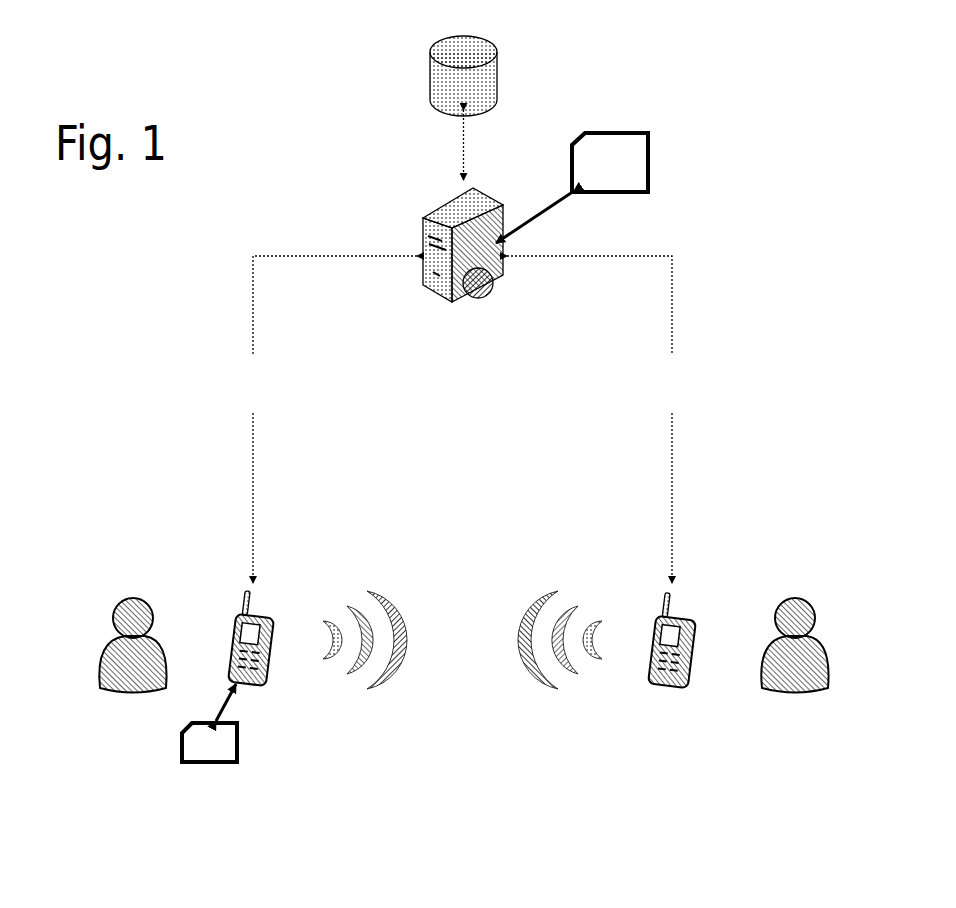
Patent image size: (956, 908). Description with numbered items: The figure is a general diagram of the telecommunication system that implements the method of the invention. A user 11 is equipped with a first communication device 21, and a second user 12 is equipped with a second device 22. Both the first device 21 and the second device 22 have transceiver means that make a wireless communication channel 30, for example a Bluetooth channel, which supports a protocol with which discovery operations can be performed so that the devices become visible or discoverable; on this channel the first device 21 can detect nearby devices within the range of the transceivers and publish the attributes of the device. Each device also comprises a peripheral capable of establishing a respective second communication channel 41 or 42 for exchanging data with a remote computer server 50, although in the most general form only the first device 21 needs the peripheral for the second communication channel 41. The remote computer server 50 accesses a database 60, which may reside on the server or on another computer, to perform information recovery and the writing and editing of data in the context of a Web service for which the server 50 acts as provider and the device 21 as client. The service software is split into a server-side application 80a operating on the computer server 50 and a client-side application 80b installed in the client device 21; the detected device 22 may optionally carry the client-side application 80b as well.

The user 11 is at (130, 692).
The second user 12 is at (810, 692).
The first communication device 21 is at (272, 662).
The second device 22 is at (680, 688).
The wireless communication channel 30 is at (462, 659).
The second communication channel 41 is at (328, 419).
The second communication channel 42 is at (597, 419).
The remote computer server 50 is at (450, 302).
The database 60 is at (497, 62).
The application 80a is at (640, 177).
The application 80b is at (223, 762).